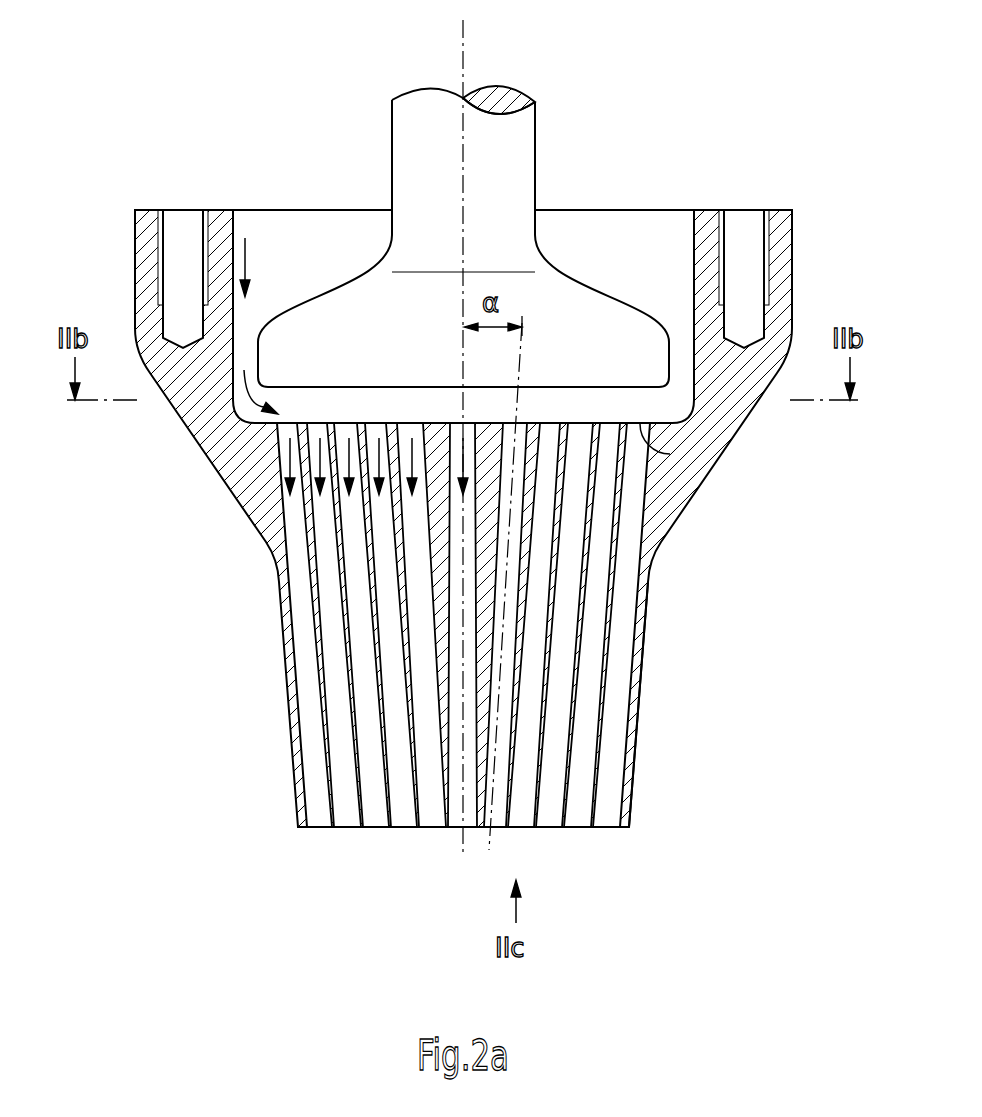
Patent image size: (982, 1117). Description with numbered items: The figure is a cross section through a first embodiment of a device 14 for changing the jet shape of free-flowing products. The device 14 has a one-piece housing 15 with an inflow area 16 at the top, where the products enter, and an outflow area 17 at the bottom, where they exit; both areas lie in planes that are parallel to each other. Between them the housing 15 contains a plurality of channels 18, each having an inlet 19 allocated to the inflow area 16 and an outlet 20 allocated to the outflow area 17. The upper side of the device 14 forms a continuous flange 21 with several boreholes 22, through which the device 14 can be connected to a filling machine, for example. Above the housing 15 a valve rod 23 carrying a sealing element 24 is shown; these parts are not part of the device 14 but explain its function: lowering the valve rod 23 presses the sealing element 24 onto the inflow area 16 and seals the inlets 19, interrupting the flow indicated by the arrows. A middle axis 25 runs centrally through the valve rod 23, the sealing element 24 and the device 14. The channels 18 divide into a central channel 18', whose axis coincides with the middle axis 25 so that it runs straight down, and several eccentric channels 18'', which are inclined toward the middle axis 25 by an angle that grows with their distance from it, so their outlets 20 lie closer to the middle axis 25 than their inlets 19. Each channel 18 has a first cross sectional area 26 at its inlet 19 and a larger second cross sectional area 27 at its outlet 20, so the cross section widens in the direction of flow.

The device 14 is at (500, 432).
The housing 15 is at (500, 486).
The inflow area 16 is at (611, 399).
The outflow area 17 is at (578, 873).
The channels 18 is at (539, 625).
The central channel 18' is at (599, 625).
The eccentric channels 18'' is at (616, 625).
The inlet 19 is at (380, 423).
The outlet 20 is at (378, 828).
The flange 21 is at (783, 243).
The boreholes 22 is at (745, 225).
The valve rod 23 is at (515, 152).
The sealing element 24 is at (588, 333).
The middle axis 25 is at (465, 42).
The first cross sectional area 26 is at (643, 440).
The second cross sectional area 27 is at (605, 822).